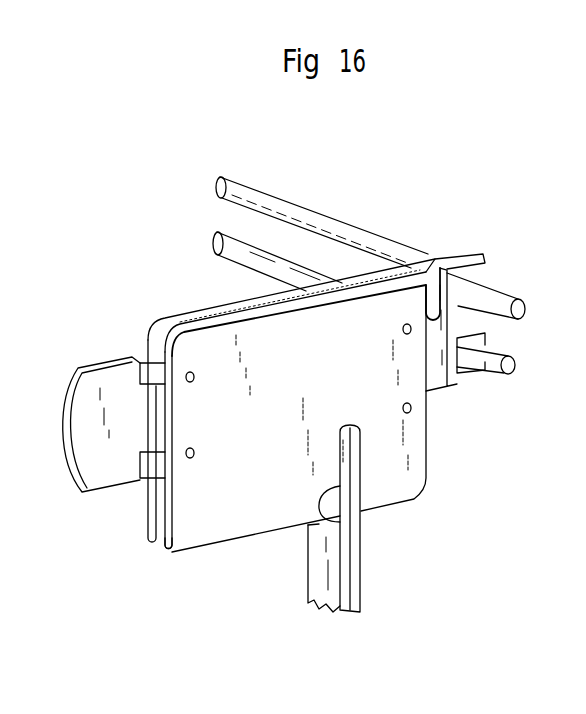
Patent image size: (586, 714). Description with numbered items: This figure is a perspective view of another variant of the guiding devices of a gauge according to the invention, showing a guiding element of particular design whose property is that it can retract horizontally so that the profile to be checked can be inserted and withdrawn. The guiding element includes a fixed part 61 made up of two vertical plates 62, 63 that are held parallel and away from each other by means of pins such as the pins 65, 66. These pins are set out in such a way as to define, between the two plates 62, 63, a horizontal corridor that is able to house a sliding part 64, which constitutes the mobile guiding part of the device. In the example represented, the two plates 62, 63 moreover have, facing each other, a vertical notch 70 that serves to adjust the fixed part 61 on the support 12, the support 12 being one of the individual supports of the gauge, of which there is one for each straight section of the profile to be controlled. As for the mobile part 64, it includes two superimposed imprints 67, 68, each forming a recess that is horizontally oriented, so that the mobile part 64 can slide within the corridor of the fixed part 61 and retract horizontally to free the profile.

The support 12 is at (308, 558).
The fixed part 61 is at (148, 550).
The vertical plate 62 is at (150, 502).
The vertical plate 63 is at (168, 552).
The sliding part 64 is at (103, 383).
The pin 65 is at (190, 460).
The pin 66 is at (190, 377).
The imprint 67 is at (490, 268).
The imprint 68 is at (484, 375).
The vertical notch 70 is at (340, 526).